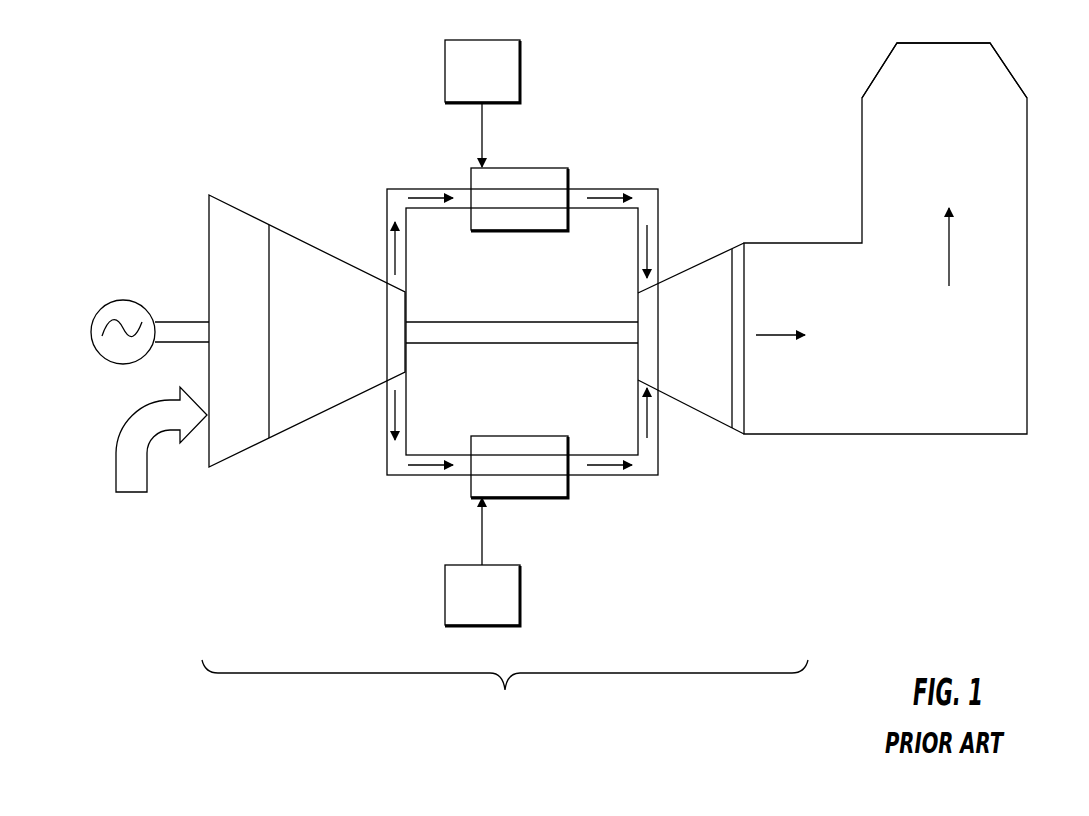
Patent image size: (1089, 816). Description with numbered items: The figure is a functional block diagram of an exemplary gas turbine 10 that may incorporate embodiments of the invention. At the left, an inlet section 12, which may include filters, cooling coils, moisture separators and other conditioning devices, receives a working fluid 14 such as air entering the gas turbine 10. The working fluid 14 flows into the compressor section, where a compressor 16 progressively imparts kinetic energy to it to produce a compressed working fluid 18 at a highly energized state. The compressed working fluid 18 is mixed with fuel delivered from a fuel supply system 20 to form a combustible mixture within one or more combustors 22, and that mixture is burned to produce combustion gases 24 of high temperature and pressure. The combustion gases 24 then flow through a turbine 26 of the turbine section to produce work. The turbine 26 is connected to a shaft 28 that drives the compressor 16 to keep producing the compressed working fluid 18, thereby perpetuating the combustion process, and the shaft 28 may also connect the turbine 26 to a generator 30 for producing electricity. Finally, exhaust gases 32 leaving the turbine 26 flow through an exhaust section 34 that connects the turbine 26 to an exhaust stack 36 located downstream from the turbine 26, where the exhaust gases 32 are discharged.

The gas turbine 10 is at (505, 695).
The inlet section 12 is at (253, 348).
The working fluid 14 is at (130, 494).
The compressor 16 is at (346, 348).
The compressed working fluid 18 is at (388, 258).
The fuel supply system 20 is at (495, 88).
The combustors 22 is at (532, 216).
The combustion gases 24 is at (650, 247).
The turbine 26 is at (698, 349).
The shaft 28 is at (513, 344).
The generator 30 is at (123, 299).
The exhaust gases 32 is at (772, 338).
The exhaust section 34 is at (957, 351).
The exhaust stack 36 is at (1028, 144).